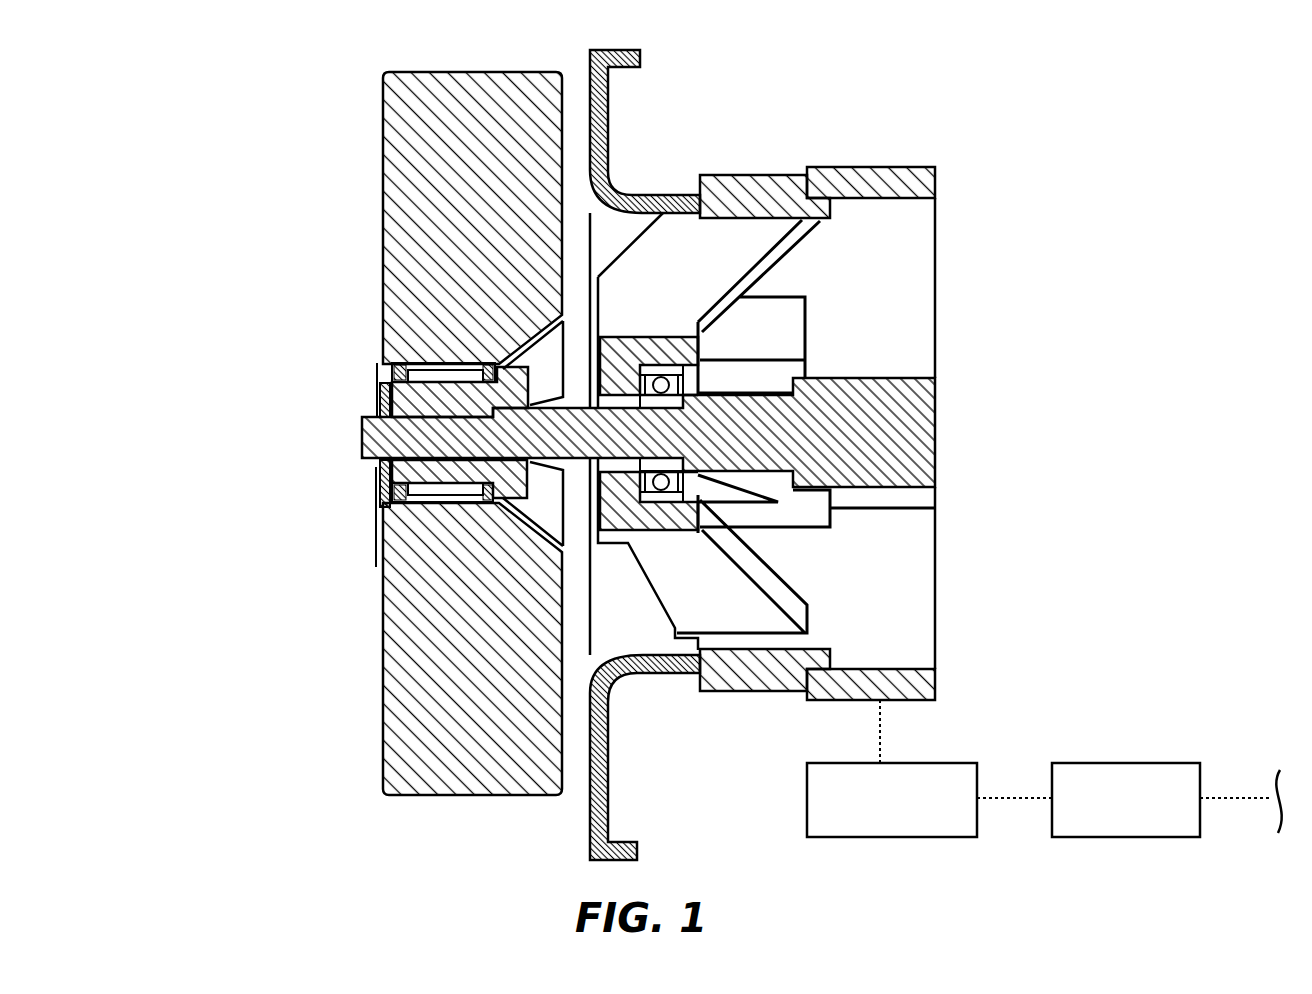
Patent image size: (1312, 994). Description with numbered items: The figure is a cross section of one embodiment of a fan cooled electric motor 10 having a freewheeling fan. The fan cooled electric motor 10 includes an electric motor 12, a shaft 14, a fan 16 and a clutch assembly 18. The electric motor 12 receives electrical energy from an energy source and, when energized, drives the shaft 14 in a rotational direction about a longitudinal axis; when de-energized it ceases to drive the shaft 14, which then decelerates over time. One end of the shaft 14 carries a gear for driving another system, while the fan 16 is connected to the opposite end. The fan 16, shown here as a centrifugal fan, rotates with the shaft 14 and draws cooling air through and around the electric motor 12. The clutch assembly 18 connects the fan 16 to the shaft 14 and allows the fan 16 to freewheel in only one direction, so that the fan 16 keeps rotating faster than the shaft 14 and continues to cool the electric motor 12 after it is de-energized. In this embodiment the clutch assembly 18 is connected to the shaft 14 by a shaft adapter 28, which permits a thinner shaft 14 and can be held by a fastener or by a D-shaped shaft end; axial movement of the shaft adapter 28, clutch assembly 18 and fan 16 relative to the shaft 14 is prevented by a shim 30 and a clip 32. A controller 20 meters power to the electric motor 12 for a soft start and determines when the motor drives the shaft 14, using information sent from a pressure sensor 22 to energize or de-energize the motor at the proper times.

The fan cooled electric motor 10 is at (173, 168).
The electric motor 12 is at (598, 55).
The shaft 14 is at (377, 443).
The fan 16 is at (412, 113).
The clutch assembly 18 is at (433, 505).
The controller 20 is at (907, 837).
The pressure sensor 22 is at (1136, 837).
The shaft adapter 28 is at (510, 498).
The shim 30 is at (390, 368).
The clip 32 is at (375, 412).